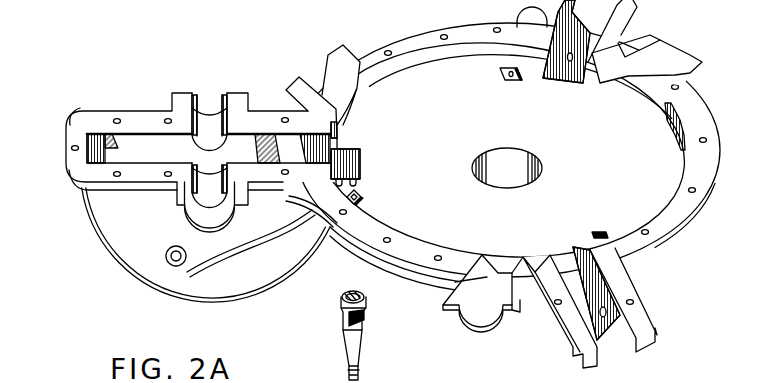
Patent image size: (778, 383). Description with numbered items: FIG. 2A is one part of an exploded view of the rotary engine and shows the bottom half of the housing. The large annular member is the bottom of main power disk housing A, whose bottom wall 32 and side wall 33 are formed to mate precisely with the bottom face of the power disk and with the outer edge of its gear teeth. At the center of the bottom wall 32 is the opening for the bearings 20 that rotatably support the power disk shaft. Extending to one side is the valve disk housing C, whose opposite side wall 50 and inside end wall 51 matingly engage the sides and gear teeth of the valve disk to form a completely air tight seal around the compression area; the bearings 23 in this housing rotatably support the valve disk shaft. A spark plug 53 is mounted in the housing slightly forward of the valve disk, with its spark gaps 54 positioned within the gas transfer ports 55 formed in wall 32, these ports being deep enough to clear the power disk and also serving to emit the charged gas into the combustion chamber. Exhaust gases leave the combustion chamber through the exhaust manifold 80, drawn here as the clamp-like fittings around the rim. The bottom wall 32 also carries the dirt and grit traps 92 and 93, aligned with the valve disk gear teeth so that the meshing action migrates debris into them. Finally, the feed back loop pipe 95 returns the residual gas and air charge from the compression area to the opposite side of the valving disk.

The bearings 20 is at (515, 163).
The bearings 23 is at (208, 117).
The bottom wall 32 is at (492, 146).
The side wall 33 is at (407, 63).
The opposite side wall 50 is at (135, 140).
The inside end wall 51 is at (84, 148).
The spark plug 53 is at (363, 350).
The spark gaps 54 is at (353, 291).
The gas transfer ports 55 is at (503, 80).
The exhaust manifold 80 is at (318, 84).
The trap 92 is at (346, 173).
The trap 93 is at (364, 183).
The feed back loop pipe 95 is at (248, 248).
The housing C is at (203, 301).